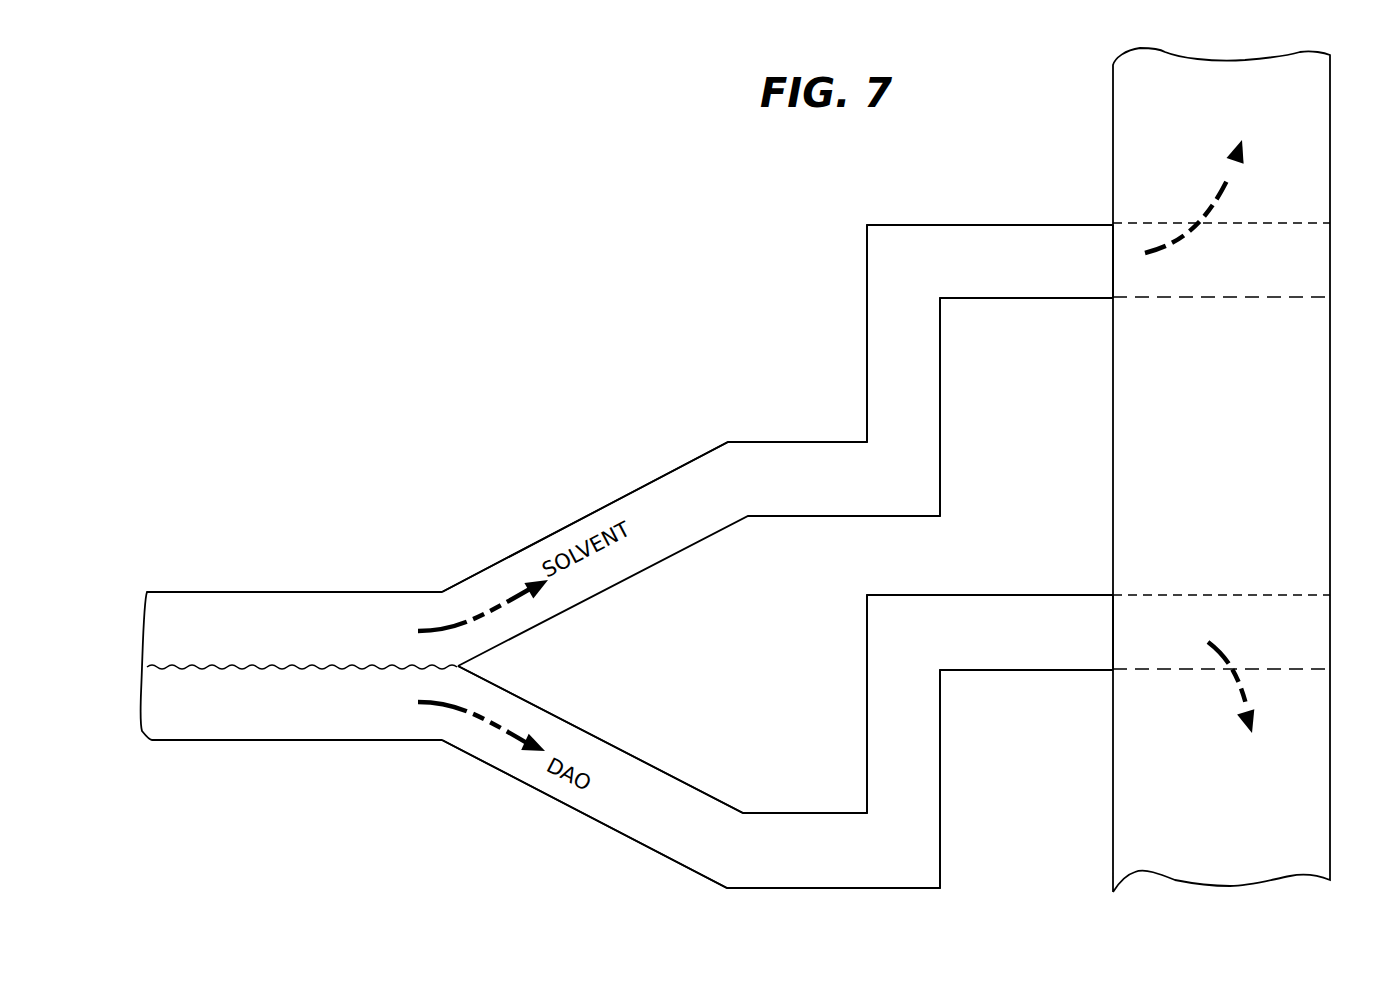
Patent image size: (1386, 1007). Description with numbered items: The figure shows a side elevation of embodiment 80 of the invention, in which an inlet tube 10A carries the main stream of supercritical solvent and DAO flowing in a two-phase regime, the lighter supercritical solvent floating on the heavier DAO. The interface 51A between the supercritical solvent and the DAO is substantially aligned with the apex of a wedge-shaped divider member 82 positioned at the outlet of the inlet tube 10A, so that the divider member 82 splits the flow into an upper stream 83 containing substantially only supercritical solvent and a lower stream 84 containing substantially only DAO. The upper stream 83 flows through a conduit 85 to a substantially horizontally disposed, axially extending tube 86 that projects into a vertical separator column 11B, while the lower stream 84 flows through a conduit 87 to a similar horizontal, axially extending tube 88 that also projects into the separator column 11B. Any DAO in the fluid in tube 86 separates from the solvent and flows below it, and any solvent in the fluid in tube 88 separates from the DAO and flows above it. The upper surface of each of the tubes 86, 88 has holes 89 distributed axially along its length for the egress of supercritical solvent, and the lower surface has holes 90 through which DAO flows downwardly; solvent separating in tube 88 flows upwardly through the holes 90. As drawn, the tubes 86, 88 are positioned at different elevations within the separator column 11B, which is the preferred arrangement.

The embodiment 80 is at (486, 344).
The inlet tube 10A is at (190, 741).
The interface 51A is at (255, 663).
The wedge-shaped divider member 82 is at (667, 780).
The upper stream 83 is at (586, 530).
The lower stream 84 is at (586, 803).
The conduit 85 is at (941, 390).
The conduit 87 is at (941, 765).
The tube 86 is at (1118, 298).
The tube 88 is at (1118, 670).
The holes 89 is at (1274, 223).
The holes 90 is at (1277, 300).
The vertical separator column 11B is at (1331, 455).